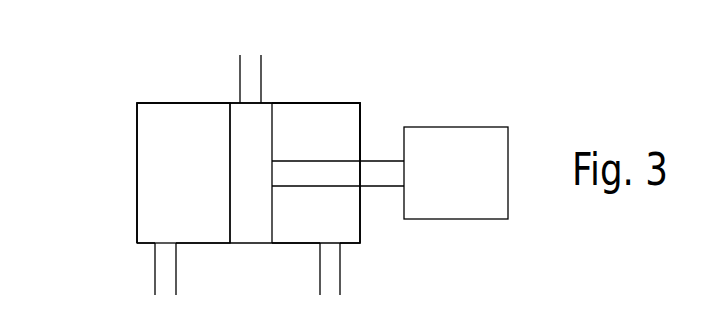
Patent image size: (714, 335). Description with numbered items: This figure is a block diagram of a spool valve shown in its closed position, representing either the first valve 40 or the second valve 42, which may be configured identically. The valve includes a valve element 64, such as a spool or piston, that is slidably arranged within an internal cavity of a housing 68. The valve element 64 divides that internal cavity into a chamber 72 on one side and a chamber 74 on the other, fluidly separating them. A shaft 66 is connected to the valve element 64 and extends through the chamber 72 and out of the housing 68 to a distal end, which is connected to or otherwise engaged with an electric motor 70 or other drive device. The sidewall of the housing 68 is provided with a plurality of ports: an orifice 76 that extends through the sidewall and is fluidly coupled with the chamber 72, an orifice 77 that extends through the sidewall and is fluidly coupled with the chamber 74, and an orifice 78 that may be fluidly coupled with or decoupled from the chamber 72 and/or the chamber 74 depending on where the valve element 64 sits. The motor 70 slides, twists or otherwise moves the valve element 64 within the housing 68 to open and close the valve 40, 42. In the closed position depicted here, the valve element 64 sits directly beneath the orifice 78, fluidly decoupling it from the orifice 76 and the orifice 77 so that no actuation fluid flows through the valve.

The first valve 40 is at (123, 90).
The second valve 42 is at (248, 173).
The valve element 64 is at (252, 233).
The shaft 66 is at (383, 187).
The housing 68 is at (332, 100).
The electric motor 70 is at (472, 183).
The chamber 72 is at (329, 224).
The chamber 74 is at (209, 183).
The orifice 76 is at (330, 290).
The orifice 77 is at (164, 295).
The orifice 78 is at (252, 52).